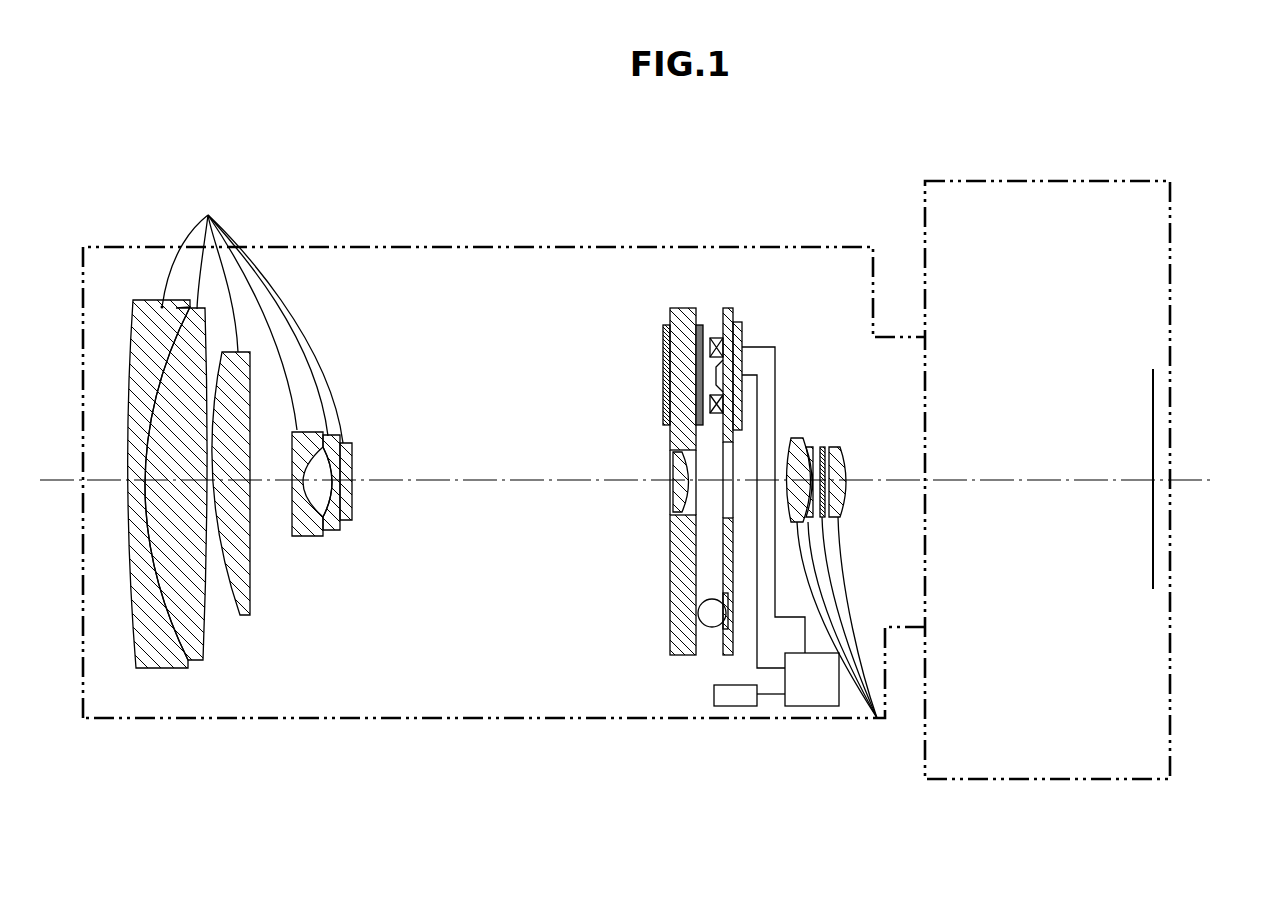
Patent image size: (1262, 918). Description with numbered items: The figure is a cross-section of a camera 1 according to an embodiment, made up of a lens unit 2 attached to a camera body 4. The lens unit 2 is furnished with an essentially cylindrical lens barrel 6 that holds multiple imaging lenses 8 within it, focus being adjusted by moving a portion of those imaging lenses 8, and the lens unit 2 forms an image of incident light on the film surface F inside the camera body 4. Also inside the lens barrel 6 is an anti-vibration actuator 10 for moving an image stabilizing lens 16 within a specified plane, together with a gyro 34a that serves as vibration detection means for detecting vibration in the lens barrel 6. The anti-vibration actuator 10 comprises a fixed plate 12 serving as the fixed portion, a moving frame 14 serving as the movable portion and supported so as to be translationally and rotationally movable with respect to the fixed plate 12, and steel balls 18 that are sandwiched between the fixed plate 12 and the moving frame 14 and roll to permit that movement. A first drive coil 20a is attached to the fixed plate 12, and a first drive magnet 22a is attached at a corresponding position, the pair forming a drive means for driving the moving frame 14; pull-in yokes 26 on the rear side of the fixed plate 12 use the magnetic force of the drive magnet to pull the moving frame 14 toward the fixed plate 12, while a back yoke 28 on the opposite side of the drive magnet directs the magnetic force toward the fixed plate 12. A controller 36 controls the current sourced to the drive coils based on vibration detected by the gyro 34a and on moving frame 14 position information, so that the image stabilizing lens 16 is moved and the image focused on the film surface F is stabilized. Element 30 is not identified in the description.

The camera 1 is at (604, 186).
The lens unit 2 is at (396, 243).
The camera body 4 is at (1043, 178).
The lens barrel 6 is at (410, 719).
The imaging lenses 8 is at (208, 215).
The anti-vibration actuator 10 is at (751, 286).
The fixed plate 12 is at (735, 313).
The moving frame 14 is at (670, 318).
The image stabilizing lens 16 is at (673, 495).
The steel balls 18 is at (707, 613).
The first drive coil 20a is at (712, 403).
The first drive magnet 22a is at (700, 325).
The pull-in yokes 26 is at (742, 333).
The back yoke 28 is at (663, 375).
The position sensor 30 is at (725, 600).
The gyro 34a is at (728, 706).
The controller 36 is at (808, 706).
The film surface F is at (1152, 568).